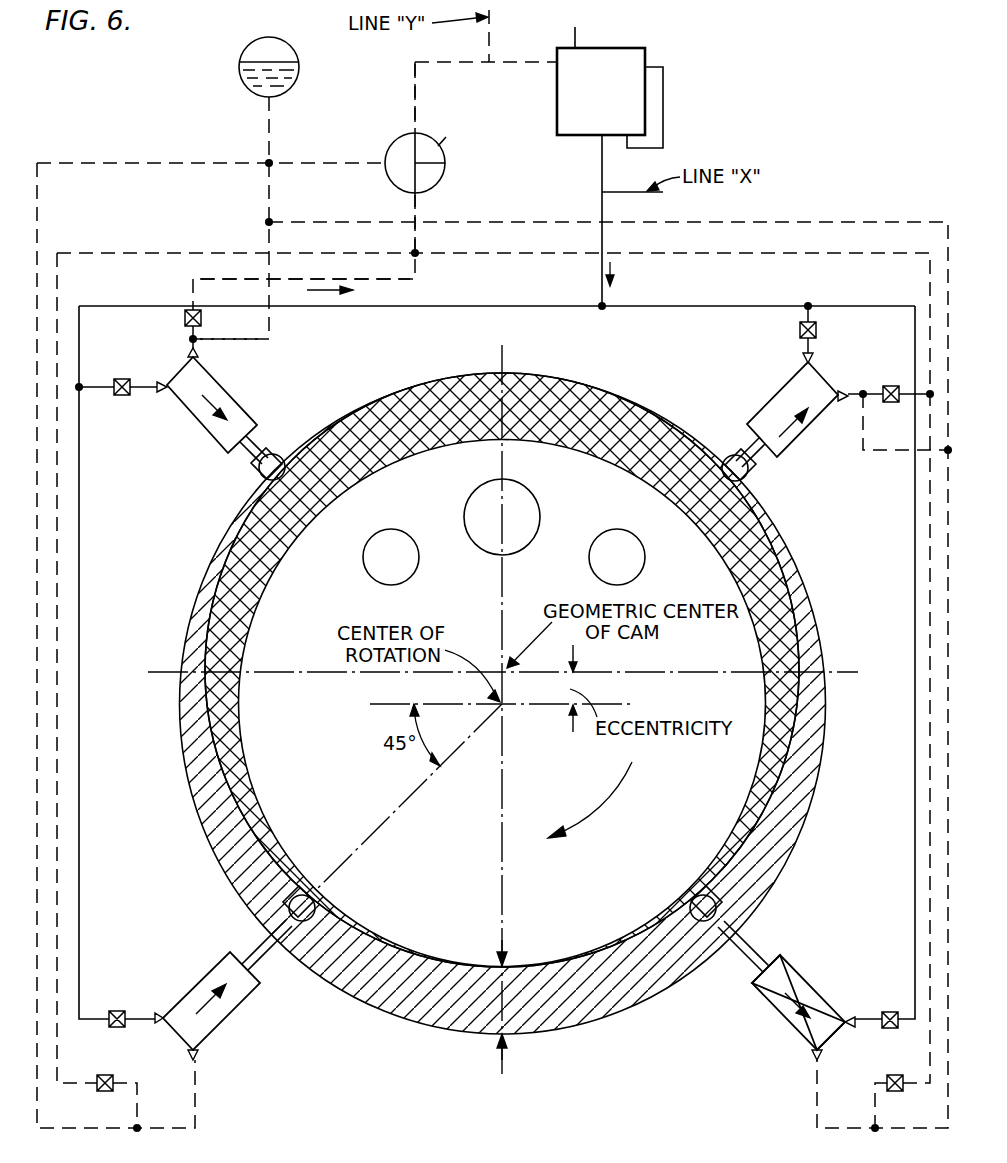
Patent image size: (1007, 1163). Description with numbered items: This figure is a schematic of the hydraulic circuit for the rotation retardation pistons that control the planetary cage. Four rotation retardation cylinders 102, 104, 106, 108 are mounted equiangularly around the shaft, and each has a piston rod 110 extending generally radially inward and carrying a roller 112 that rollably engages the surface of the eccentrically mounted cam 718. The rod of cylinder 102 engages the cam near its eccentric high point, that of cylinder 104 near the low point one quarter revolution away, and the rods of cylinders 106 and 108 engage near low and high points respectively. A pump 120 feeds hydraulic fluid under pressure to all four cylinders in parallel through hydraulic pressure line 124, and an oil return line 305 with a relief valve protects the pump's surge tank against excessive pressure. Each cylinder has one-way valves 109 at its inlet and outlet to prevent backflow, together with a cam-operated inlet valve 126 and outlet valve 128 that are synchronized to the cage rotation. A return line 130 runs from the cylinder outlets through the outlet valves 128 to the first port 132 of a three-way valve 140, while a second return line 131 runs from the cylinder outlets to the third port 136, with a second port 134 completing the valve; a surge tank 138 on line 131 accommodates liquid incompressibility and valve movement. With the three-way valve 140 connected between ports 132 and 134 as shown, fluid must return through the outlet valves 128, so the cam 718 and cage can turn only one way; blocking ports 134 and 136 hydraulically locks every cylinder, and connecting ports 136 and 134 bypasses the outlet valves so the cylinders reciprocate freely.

The rotation retardation cylinder 102 is at (238, 395).
The rotation retardation cylinder 104 is at (244, 1004).
The rotation retardation cylinder 106 is at (800, 968).
The rotation retardation cylinder 108 is at (792, 438).
The one-way valve 109 is at (163, 380).
The piston rod 110 is at (248, 437).
The roller 112 is at (262, 471).
The pump 120 is at (632, 48).
The hydraulic pressure line 124 is at (598, 276).
The inlet cam valve 126 is at (122, 397).
The outlet cam valve 128 is at (184, 318).
The return line 130 is at (290, 278).
The return line 131 is at (272, 328).
The first port 132 is at (415, 210).
The second port 134 is at (419, 106).
The third port 136 is at (380, 162).
The surge tank 138 is at (248, 51).
The three-way valve 140 is at (440, 144).
The oil return line 305 is at (665, 105).
The cam 718 is at (449, 868).